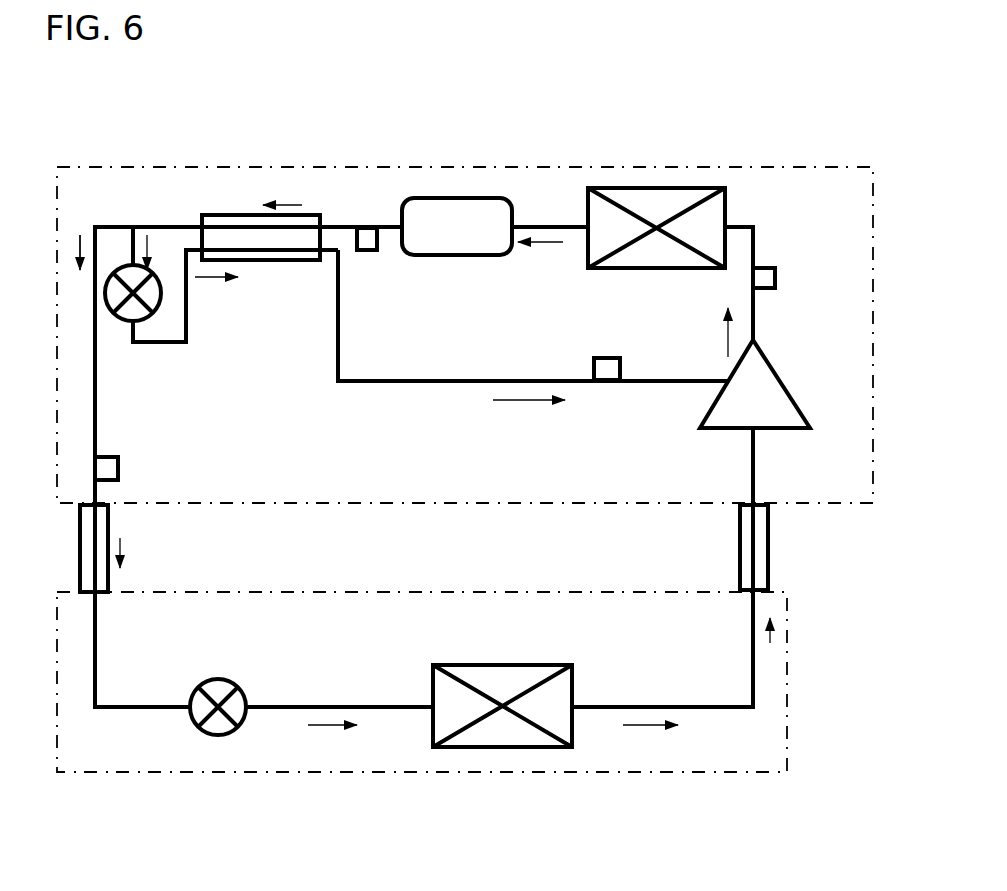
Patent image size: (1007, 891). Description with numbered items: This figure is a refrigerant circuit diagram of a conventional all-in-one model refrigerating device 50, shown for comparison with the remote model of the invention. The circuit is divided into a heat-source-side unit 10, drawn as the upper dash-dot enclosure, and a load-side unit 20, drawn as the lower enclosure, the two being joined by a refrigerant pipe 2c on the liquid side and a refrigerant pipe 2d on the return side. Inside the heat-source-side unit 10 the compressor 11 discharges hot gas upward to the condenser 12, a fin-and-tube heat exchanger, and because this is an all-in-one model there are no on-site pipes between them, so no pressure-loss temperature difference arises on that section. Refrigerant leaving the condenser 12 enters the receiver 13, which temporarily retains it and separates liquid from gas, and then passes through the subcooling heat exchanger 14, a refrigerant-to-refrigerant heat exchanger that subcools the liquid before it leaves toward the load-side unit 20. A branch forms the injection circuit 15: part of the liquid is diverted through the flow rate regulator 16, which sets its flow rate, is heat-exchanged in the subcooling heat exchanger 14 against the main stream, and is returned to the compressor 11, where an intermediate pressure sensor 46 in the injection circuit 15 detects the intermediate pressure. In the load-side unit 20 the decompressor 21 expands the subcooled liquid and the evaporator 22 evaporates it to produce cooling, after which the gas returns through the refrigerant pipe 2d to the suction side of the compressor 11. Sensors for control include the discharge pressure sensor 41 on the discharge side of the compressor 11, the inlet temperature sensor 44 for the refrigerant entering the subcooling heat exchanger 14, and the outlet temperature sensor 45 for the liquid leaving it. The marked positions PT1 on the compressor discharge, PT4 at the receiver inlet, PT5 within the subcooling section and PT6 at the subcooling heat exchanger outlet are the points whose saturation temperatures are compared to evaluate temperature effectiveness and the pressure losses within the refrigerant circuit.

The heat-source-side unit 10 is at (510, 503).
The compressor 11 is at (782, 383).
The condenser 12 is at (588, 268).
The receiver 13 is at (458, 256).
The subcooling heat exchanger 14 is at (258, 263).
The injection circuit 15 is at (395, 380).
The flow rate regulator 16 is at (127, 266).
The load-side unit 20 is at (787, 720).
The decompressor 21 is at (238, 688).
The evaporator 22 is at (573, 677).
The refrigerant pipe 2c is at (80, 545).
The refrigerant pipe 2d is at (740, 545).
The discharge pressure sensor 41 is at (776, 283).
The inlet temperature sensor 44 is at (366, 251).
The outlet temperature sensor 45 is at (119, 470).
The intermediate pressure sensor 46 is at (606, 358).
The conventional all-in-one model refrigerating device 50 is at (827, 575).
The position on the discharge side of the compressor PT1 is at (753, 283).
The position on the inlet side of the receiver PT4 is at (552, 227).
The position in the subcooling heat exchanger section PT5 is at (376, 227).
The position on the outlet side of the subcooling heat exchanger PT6 is at (95, 470).